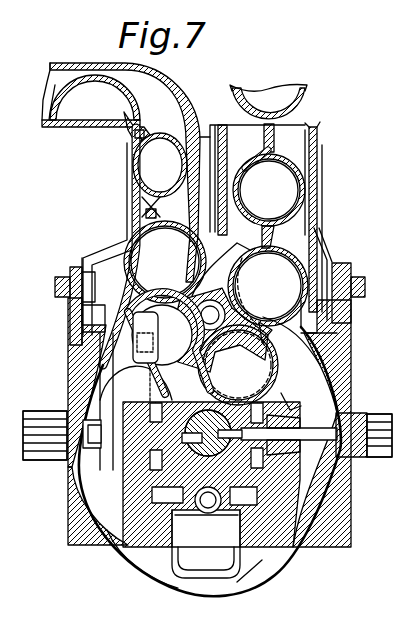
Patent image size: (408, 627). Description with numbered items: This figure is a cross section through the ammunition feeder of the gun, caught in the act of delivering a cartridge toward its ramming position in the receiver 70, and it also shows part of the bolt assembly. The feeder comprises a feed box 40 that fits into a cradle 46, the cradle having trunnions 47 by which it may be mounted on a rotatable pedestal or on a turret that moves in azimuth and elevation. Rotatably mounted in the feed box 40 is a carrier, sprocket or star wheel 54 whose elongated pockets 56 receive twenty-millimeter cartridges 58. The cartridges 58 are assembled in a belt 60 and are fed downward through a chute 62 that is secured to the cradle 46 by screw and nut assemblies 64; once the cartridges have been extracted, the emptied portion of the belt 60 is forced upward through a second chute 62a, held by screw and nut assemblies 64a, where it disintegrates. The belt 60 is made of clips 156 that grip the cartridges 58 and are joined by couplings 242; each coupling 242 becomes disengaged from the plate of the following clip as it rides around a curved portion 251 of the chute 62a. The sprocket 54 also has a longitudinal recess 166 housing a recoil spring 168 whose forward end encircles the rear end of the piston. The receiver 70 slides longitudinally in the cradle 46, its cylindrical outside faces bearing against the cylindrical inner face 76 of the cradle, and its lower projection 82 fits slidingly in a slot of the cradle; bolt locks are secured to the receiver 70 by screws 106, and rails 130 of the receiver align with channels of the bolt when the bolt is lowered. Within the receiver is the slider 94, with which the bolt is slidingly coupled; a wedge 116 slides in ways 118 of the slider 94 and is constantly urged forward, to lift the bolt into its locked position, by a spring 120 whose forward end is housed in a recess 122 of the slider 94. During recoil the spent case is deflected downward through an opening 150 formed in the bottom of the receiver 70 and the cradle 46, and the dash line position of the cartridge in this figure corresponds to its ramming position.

The belt 60 is at (234, 116).
The clips 156 is at (143, 128).
The curved portion of the chute 251 is at (135, 130).
The chute 62 is at (319, 135).
The chute 62a is at (132, 167).
The couplings 242 is at (151, 194).
The cartridges 58 is at (302, 166).
The carrier, sprocket or star wheel 54 is at (223, 284).
The elongated pockets 56 is at (181, 283).
The screw and nut assemblies 64a is at (92, 282).
The screw and nut assemblies 64 is at (323, 256).
The longitudinal recess 166 is at (193, 335).
The recoil spring 168 is at (216, 350).
The feed box 40 is at (349, 326).
The cradle 46 is at (70, 370).
The trunnions 47 is at (48, 414).
The inner face 76 is at (325, 397).
The rails 130 is at (119, 459).
The screws 106 is at (73, 458).
The slider 94 is at (150, 479).
The wedge 116 is at (178, 513).
The ways 118 is at (209, 513).
The spring 120 is at (207, 514).
The recess 122 is at (209, 514).
The receiver 70 is at (143, 545).
The lower projection 82 is at (185, 590).
The opening 150 is at (284, 542).